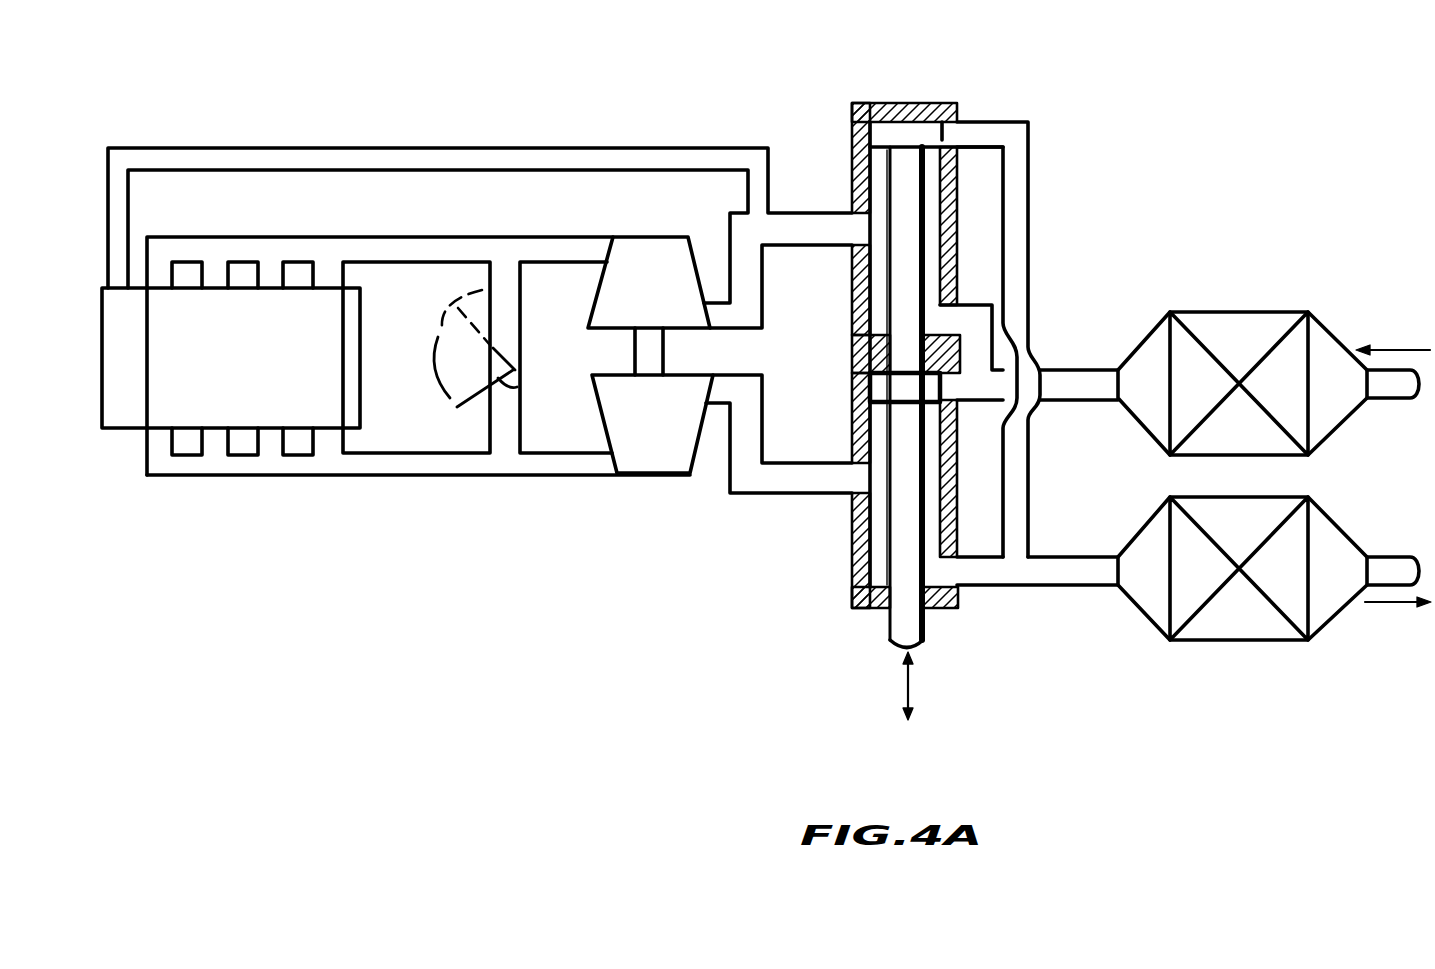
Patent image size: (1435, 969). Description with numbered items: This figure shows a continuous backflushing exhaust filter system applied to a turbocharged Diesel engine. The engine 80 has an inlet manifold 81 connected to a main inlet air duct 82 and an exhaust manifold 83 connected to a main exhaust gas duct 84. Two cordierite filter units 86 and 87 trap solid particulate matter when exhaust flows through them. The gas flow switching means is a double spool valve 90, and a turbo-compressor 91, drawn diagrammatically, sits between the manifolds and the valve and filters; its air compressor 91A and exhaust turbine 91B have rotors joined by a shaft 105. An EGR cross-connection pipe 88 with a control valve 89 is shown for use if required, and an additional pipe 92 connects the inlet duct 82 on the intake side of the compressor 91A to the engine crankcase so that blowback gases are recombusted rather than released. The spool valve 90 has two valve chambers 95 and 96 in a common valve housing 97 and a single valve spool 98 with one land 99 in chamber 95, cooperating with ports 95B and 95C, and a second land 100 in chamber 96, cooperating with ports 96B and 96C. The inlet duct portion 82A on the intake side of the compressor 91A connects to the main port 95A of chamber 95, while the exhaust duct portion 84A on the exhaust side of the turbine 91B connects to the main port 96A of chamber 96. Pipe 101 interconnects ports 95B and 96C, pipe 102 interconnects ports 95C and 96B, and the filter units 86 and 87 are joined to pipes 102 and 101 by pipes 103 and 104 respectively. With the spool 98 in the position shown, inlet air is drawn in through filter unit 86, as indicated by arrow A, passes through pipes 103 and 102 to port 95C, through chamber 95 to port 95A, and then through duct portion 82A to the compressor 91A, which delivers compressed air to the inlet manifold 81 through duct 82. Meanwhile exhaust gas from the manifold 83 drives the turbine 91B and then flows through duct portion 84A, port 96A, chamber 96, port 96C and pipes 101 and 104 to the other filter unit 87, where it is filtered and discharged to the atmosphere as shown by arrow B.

The engine 80 is at (348, 316).
The inlet manifold 81 is at (236, 222).
The main inlet air duct 82 is at (427, 237).
The inlet duct portion 82A is at (810, 222).
The exhaust manifold 83 is at (250, 478).
The main exhaust gas duct 84 is at (398, 478).
The exhaust duct portion 84A is at (767, 485).
The filter unit 86 is at (1227, 322).
The filter unit 87 is at (1254, 640).
The EGR cross-connection pipe 88 is at (513, 307).
The control valve 89 is at (512, 385).
The double spool valve 90 is at (945, 374).
The turbo-compressor 91 is at (642, 360).
The air compressor 91A is at (655, 237).
The exhaust turbine 91B is at (660, 475).
The additional pipe 92 is at (455, 149).
The valve chamber 95 is at (868, 162).
The main port 95A is at (853, 232).
The valve port 95B is at (947, 136).
The valve port 95C is at (983, 303).
The valve chamber 96 is at (870, 577).
The main port 96A is at (853, 478).
The valve port 96B is at (950, 385).
The valve port 96C is at (948, 568).
The valve housing 97 is at (852, 315).
The valve spool 98 is at (903, 632).
The land 99 is at (918, 138).
The second land 100 is at (870, 390).
The pipe 101 is at (1028, 192).
The pipe 102 is at (950, 320).
The pipe 103 is at (1100, 372).
The pipe 104 is at (1075, 582).
The shaft 105 is at (665, 353).